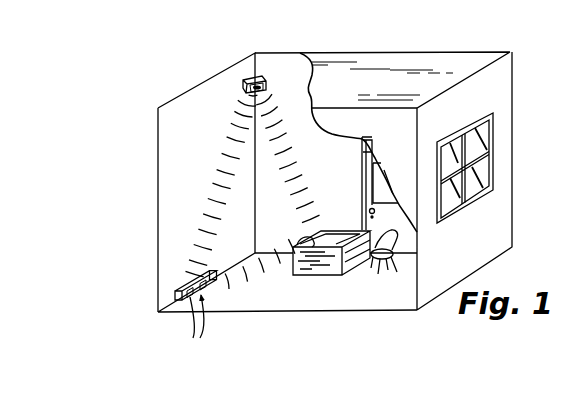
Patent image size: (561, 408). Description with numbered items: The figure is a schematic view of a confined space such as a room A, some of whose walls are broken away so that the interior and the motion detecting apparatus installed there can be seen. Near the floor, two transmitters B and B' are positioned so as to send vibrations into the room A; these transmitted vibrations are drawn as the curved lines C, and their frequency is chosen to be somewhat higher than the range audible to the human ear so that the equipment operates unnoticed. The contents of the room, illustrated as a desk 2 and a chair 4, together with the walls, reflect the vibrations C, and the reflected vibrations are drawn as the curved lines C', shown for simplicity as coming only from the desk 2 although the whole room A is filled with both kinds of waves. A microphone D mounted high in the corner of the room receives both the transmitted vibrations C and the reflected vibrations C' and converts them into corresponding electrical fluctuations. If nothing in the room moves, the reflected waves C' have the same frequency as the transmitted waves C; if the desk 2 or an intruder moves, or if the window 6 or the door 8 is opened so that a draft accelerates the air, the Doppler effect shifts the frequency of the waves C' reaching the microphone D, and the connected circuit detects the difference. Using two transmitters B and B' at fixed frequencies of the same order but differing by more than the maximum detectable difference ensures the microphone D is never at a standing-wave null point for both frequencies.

The room A is at (258, 298).
The transmitter B is at (145, 295).
The second transmitter B' is at (218, 295).
The transmitted vibrations C is at (240, 192).
The reflected vibrations C' is at (276, 158).
The microphone D is at (246, 75).
The desk 2 is at (325, 275).
The chair 4 is at (383, 269).
The window 6 is at (489, 175).
The door 8 is at (377, 183).